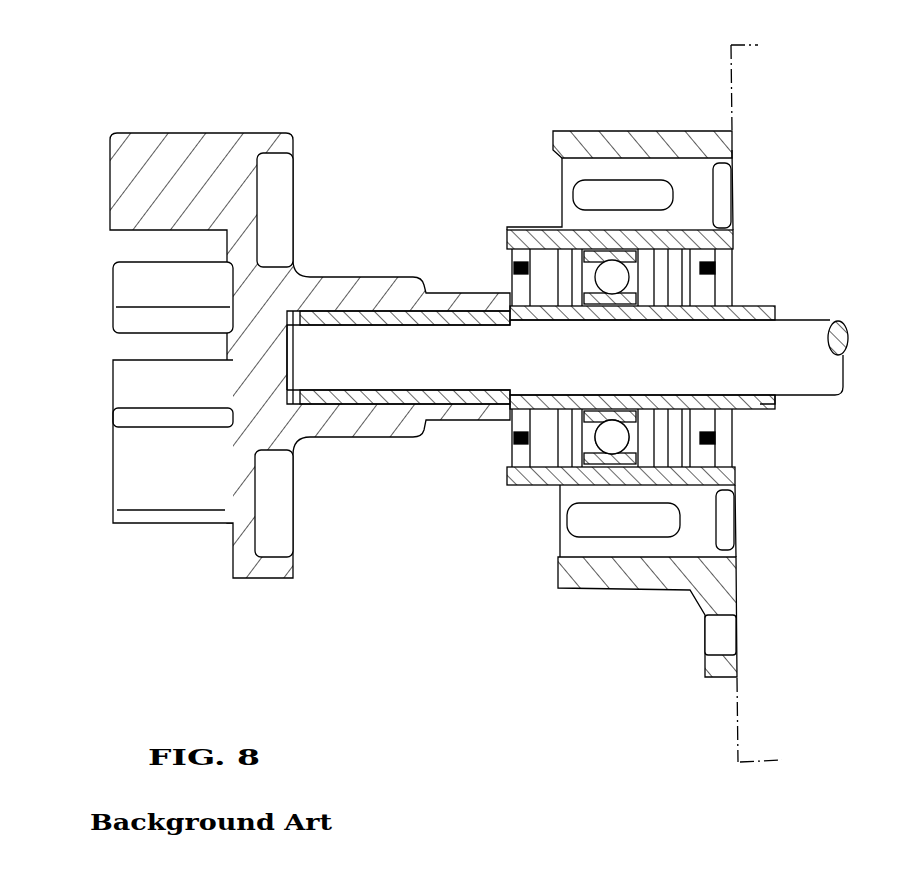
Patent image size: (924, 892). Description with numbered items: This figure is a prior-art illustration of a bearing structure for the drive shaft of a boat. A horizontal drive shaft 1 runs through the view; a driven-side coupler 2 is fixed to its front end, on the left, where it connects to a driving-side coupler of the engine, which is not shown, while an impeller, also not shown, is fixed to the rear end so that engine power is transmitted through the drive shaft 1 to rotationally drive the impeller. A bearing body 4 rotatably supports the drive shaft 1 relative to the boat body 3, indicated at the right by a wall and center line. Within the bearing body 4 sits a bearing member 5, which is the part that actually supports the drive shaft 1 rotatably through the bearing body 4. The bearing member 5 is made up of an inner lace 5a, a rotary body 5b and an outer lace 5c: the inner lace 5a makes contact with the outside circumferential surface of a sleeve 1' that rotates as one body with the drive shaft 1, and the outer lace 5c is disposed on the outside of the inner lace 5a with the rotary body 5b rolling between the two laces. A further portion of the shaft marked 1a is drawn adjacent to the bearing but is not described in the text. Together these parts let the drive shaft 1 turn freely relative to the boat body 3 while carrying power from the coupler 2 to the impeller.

The drive shaft 1 is at (595, 333).
The sleeve 1' is at (796, 425).
The shaft sleeve / small-diameter portion 1a is at (553, 478).
The driven-side coupler 2 is at (195, 553).
The boat body 3 is at (732, 80).
The bearing body 4 is at (622, 588).
The bearing member 5 is at (608, 472).
The inner lace 5a is at (638, 404).
The rotary body 5b is at (611, 275).
The outer lace 5c is at (641, 474).